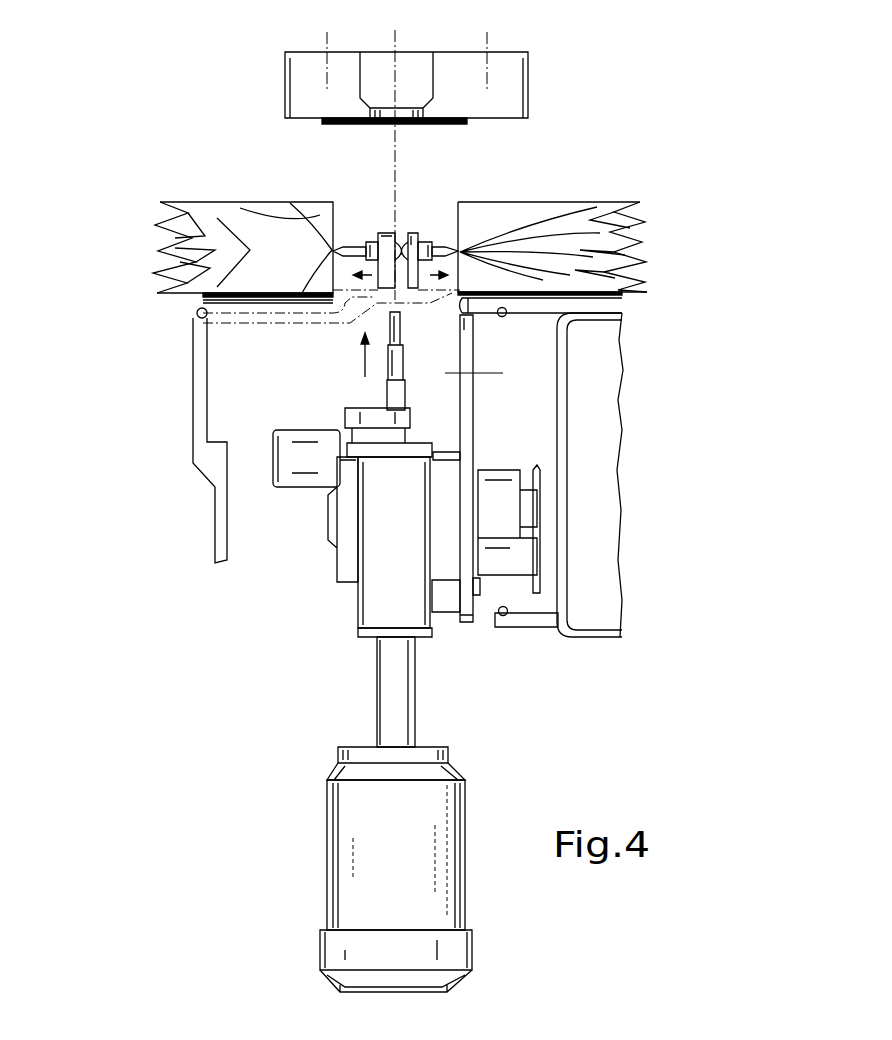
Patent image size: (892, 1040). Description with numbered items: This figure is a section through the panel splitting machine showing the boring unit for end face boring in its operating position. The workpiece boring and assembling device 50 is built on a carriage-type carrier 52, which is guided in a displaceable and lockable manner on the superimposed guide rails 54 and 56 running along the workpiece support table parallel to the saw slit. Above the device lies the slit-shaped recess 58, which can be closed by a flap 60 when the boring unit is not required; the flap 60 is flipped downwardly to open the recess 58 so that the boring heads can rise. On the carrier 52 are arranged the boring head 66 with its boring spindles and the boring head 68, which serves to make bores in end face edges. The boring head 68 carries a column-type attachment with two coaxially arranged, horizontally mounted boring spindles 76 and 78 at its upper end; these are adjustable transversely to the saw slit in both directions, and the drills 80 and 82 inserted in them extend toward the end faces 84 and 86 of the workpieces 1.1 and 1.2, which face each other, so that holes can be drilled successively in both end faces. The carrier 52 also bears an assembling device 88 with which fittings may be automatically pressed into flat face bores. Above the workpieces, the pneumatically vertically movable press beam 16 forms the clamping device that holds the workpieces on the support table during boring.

The press beam 16 is at (417, 82).
The workpiece 1.1 is at (190, 248).
The workpiece 1.2 is at (637, 243).
The drill 80 is at (331, 249).
The drill 82 is at (462, 252).
The end face 84 is at (458, 225).
The end face edge 86 is at (340, 246).
The boring head 68 is at (412, 237).
The boring spindle 76 is at (366, 258).
The boring spindle 78 is at (420, 262).
The slit-shaped recess 58 is at (340, 303).
The flap 60 is at (205, 460).
The boring head 66 is at (400, 360).
The assembling device 88 is at (393, 520).
The boring and assembling device 50 is at (353, 630).
The carriage-type carrier 52 is at (467, 603).
The guide rail 54 is at (572, 320).
The guide rail 56 is at (540, 620).